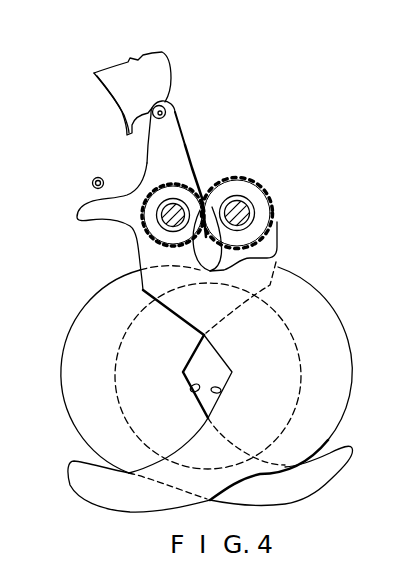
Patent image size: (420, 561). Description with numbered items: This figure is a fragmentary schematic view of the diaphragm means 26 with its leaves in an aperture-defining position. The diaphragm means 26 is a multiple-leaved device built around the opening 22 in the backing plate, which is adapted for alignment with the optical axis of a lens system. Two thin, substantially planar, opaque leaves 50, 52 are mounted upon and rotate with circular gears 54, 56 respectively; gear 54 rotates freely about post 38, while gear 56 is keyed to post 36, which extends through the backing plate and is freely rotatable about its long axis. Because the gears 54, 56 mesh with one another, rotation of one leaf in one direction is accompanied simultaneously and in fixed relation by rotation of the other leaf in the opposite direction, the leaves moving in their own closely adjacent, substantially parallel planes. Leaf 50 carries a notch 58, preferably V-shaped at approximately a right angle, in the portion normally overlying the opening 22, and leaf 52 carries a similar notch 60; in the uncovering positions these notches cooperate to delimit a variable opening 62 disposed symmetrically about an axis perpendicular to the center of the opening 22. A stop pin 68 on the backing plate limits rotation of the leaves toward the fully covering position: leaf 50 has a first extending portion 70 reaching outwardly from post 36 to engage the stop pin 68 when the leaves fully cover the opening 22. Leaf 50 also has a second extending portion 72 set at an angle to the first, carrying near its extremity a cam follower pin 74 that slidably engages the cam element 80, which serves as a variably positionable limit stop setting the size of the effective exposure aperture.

The opening 22 is at (73, 421).
The diaphragm means 26 is at (84, 386).
The post 36 is at (240, 211).
The post 38 is at (160, 225).
The leaf 50 is at (335, 367).
The leaf 52 is at (88, 328).
The gear 54 is at (180, 176).
The gear 56 is at (249, 187).
The notch 58 is at (223, 389).
The notch 60 is at (192, 392).
The variable opening 62 is at (202, 367).
The stop pin 68 is at (93, 181).
The first extending portion 70 is at (107, 210).
The second extending portion 72 is at (170, 146).
The pin 74 is at (166, 112).
The cam element 80 is at (153, 72).